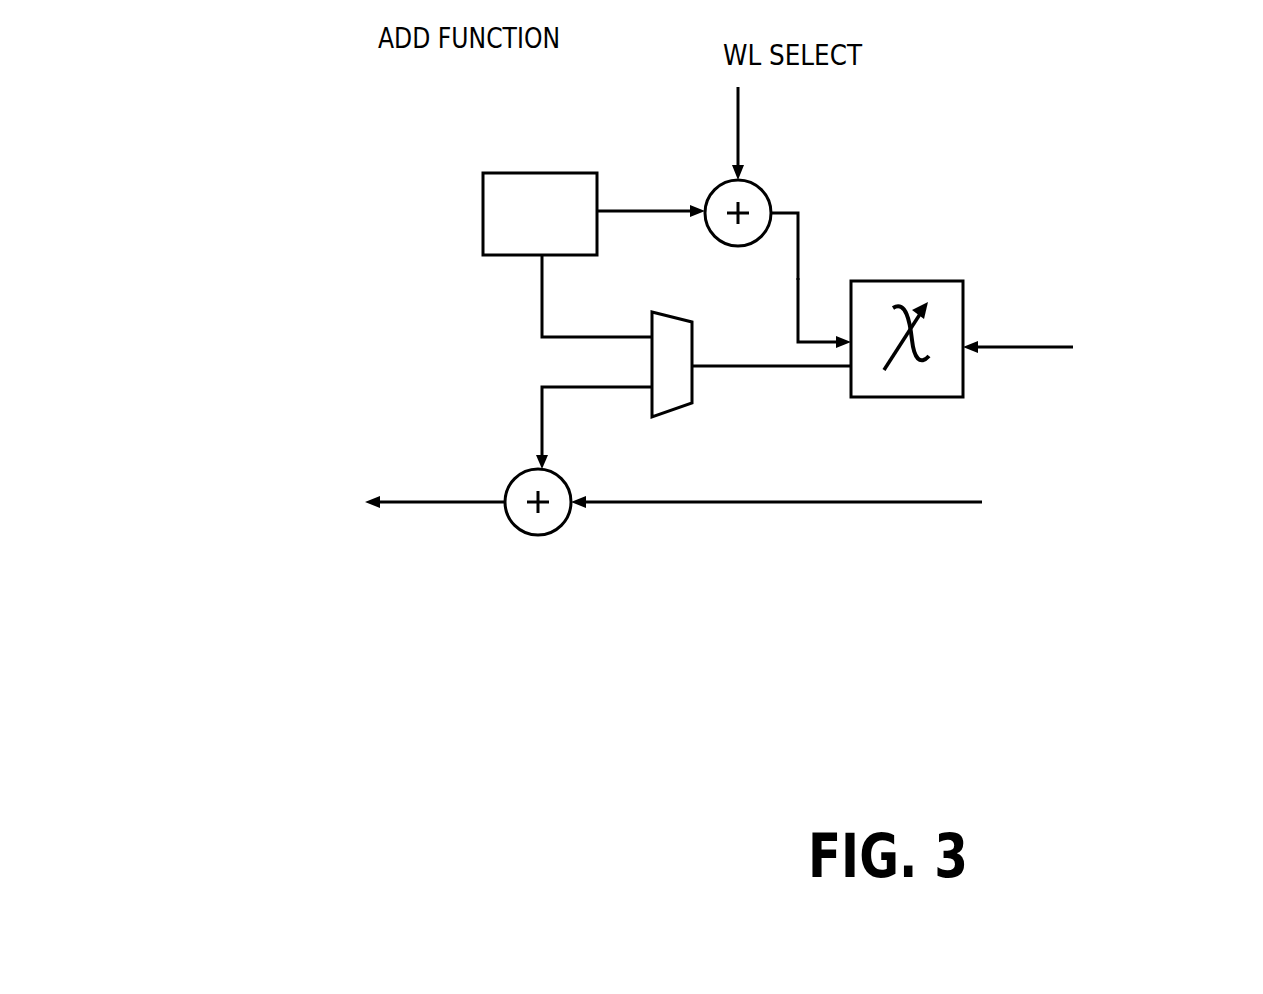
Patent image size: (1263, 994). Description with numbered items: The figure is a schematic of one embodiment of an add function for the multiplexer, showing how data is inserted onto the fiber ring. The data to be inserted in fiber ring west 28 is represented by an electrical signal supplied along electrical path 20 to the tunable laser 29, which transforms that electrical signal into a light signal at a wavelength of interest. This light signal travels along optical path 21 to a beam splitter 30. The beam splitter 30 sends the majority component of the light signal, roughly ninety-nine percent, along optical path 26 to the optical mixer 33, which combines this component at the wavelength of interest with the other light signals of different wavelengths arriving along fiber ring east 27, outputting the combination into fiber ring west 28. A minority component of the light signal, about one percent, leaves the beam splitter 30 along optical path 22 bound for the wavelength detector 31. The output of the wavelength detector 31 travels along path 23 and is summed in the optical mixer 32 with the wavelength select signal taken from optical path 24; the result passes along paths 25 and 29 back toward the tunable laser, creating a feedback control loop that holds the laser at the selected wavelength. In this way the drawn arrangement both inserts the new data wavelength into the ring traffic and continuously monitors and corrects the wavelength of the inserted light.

The electrical path 20 is at (1049, 339).
The optical path 21 is at (771, 375).
The optical path 22 is at (579, 296).
The WL detector output line 23 is at (651, 196).
The optical path 24 is at (757, 133).
The adder output line 25 is at (803, 234).
The optical path 26 is at (579, 408).
The fiber ring east 27 is at (885, 536).
The fiber ring west 28 is at (316, 536).
The tunable laser 29 is at (824, 307).
The beam splitter 30 is at (672, 349).
The wavelength detector 31 is at (527, 189).
The optical mixer 32 is at (735, 197).
The optical mixer 33 is at (529, 513).